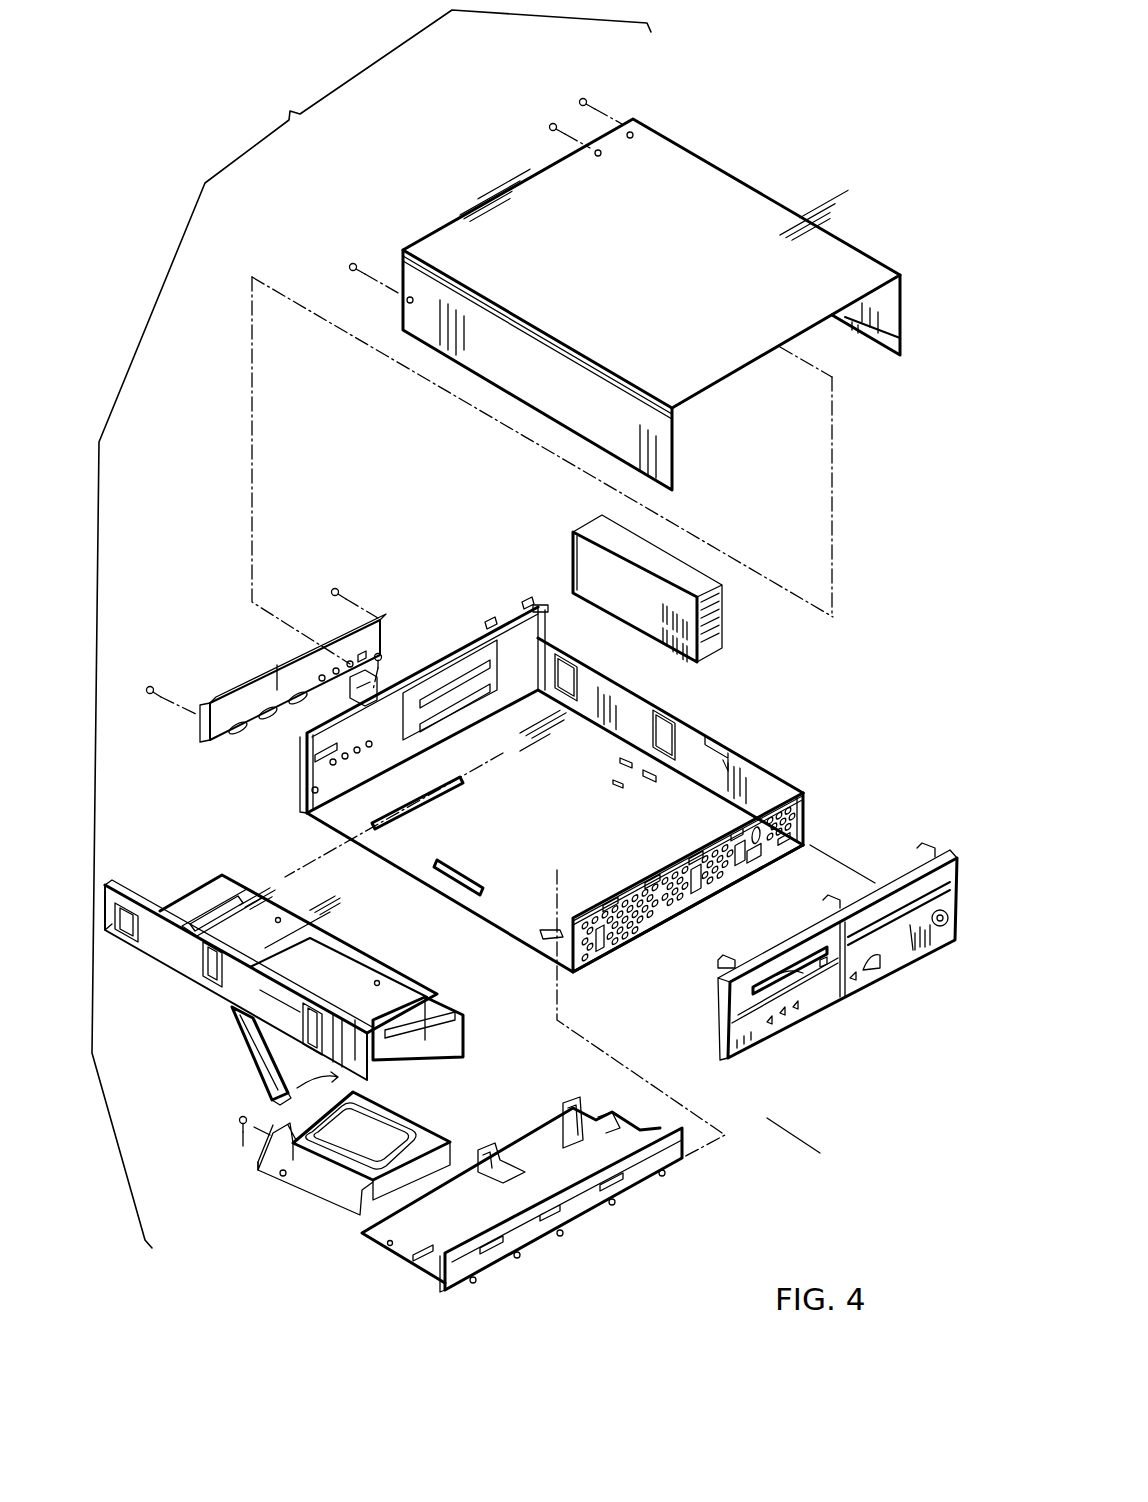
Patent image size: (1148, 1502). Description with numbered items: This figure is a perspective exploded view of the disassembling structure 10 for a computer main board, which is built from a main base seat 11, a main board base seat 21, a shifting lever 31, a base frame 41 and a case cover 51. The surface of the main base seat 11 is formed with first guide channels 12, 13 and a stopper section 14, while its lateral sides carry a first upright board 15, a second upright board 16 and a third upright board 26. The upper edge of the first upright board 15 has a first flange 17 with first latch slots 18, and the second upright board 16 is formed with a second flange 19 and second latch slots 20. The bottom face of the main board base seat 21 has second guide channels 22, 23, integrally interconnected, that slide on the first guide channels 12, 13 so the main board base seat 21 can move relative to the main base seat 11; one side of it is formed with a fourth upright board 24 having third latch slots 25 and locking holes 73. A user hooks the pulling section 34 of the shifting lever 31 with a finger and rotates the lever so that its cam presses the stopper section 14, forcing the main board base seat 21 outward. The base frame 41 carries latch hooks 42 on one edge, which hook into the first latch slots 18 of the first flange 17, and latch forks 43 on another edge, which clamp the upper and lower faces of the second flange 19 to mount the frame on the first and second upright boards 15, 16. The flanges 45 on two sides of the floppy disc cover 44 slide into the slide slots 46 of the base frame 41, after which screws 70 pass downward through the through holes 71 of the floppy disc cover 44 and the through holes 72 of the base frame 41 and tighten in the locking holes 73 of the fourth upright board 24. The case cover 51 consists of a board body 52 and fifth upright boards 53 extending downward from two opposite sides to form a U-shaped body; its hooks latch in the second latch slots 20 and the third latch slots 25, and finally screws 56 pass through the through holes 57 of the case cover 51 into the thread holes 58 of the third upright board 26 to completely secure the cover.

The disassembling structure 10 is at (256, 107).
The main base seat 11 is at (561, 803).
The first guide channel 12 is at (412, 808).
The first guide channel 13 is at (550, 928).
The stopper section 14 is at (452, 868).
The first upright board 15 is at (666, 881).
The second upright board 16 is at (670, 734).
The first flange 17 is at (803, 790).
The first latch slots 18 is at (810, 812).
The second flange 19 is at (727, 752).
The second latch slots 20 is at (567, 656).
The main board base seat 21 is at (290, 945).
The second guide channel 22 is at (245, 915).
The second guide channel 23 is at (440, 1050).
The fourth upright board 24 is at (266, 990).
The third latch slots 25 is at (183, 930).
The third upright board 26 is at (432, 660).
The shifting lever 31 is at (263, 1078).
The pulling section 34 is at (262, 1090).
The base frame 41 is at (548, 1208).
The latch hooks 42 is at (665, 1175).
The latch forks 43 is at (638, 1112).
The floppy disc cover 44 is at (420, 1127).
The flanges 45 is at (337, 1210).
The slide slots 46 is at (422, 1263).
The case cover 51 is at (678, 296).
The board body 52 is at (641, 263).
The fifth upright boards 53 is at (897, 303).
The screws 56 is at (547, 130).
The through holes 57 is at (598, 153).
The thread holes 58 is at (309, 801).
The screws 70 is at (243, 1127).
The through holes 71 is at (280, 1175).
The through holes 72 is at (410, 1260).
The locking holes 73 is at (257, 1000).